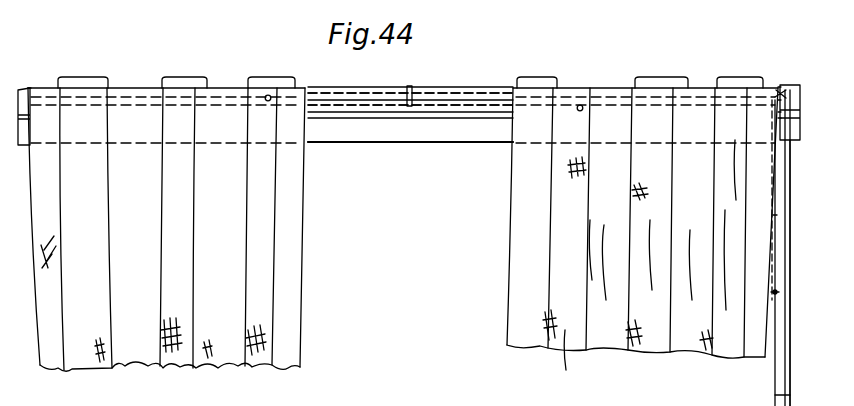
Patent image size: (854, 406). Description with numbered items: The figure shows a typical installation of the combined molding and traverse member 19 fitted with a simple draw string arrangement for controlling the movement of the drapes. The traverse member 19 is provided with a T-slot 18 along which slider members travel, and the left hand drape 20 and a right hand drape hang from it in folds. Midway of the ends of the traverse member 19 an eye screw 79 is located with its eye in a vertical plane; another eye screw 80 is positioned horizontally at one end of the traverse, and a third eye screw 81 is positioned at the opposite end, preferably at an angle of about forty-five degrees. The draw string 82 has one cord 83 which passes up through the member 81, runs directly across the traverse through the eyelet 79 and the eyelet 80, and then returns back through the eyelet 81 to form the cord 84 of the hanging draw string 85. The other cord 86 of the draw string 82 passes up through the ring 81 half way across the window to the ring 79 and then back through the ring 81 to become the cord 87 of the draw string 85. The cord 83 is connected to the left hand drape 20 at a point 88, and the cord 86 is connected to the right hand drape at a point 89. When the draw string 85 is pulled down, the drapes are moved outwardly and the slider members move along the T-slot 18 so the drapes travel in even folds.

The T-slot 18 is at (376, 118).
The combined molding and traverse member 19 is at (446, 129).
The left hand drape 20 is at (306, 260).
The eye screw 79 is at (414, 95).
The eye screw 80 is at (36, 101).
The eye screw 81 is at (778, 88).
The draw string 82 is at (790, 376).
The cord 83 is at (360, 96).
The cord 84 is at (390, 106).
The draw string 85 is at (772, 396).
The cord 86 is at (785, 324).
The cord 87 is at (772, 268).
The point 88 is at (268, 88).
The point 89 is at (582, 98).